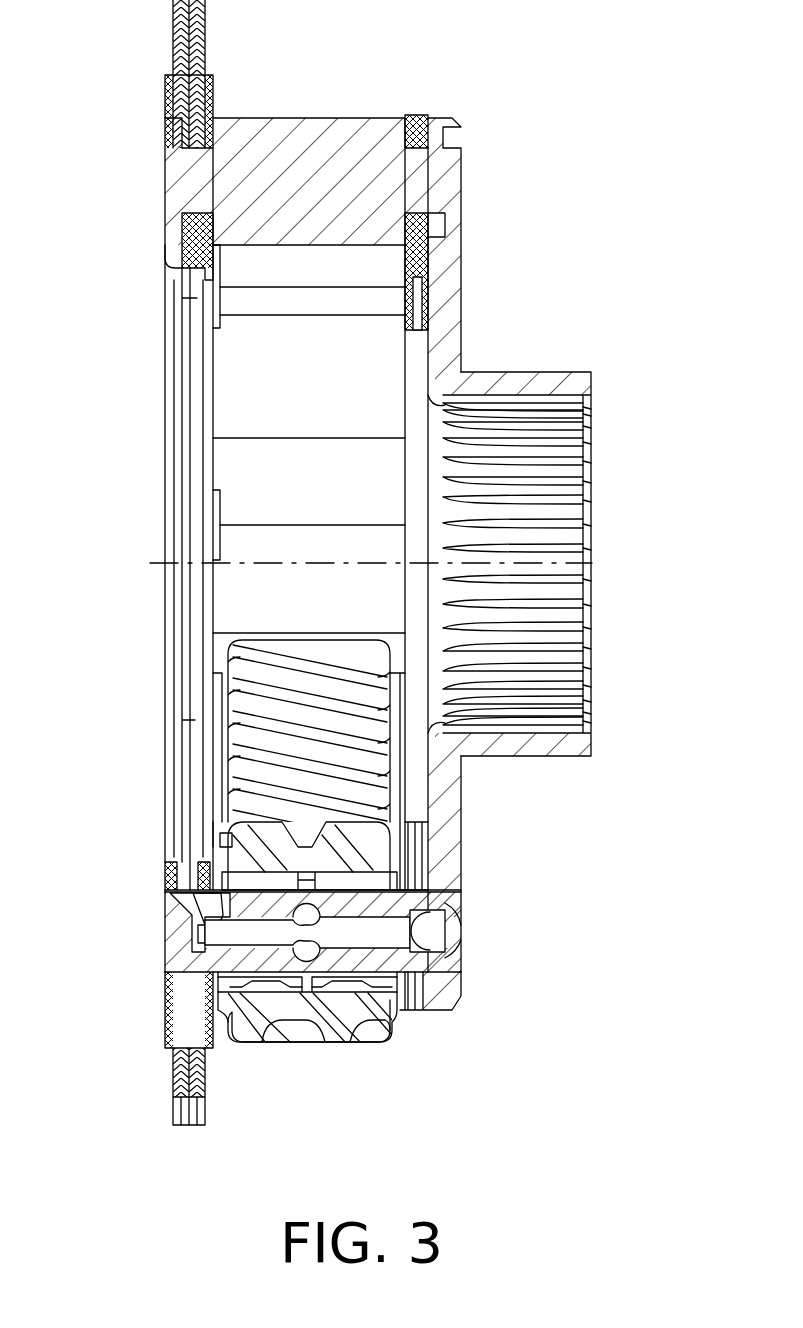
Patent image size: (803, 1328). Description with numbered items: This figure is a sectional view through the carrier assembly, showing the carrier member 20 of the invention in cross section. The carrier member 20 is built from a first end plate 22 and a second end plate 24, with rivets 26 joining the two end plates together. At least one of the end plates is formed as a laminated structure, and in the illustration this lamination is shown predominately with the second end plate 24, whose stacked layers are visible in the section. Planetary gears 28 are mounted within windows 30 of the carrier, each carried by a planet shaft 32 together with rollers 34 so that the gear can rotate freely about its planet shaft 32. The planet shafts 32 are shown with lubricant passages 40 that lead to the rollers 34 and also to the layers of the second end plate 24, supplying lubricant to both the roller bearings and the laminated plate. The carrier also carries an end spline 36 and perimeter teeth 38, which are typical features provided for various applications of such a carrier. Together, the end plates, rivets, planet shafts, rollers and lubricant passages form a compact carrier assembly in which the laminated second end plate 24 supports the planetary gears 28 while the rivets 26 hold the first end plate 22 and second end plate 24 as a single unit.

The carrier member 20 is at (420, 78).
The first end plate 22 is at (460, 265).
The second end plate 24 is at (172, 98).
The rivets 26 is at (455, 172).
The planetary gears 28 is at (262, 730).
The windows 30 is at (418, 1023).
The planet shafts 32 is at (462, 963).
The rollers 34 is at (268, 886).
The end spline 36 is at (543, 498).
The perimeter teeth 38 is at (206, 10).
The lubricant passages 40 is at (185, 912).